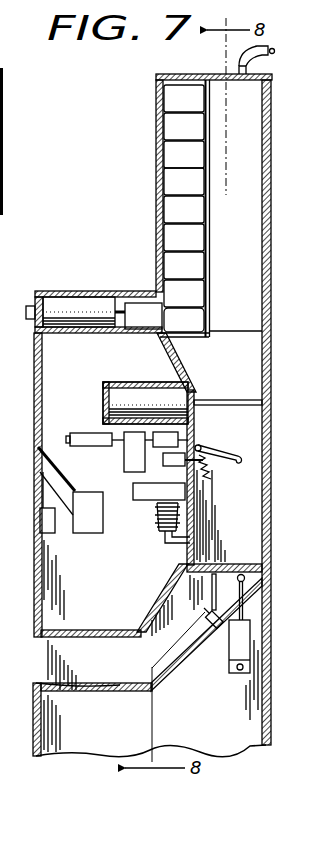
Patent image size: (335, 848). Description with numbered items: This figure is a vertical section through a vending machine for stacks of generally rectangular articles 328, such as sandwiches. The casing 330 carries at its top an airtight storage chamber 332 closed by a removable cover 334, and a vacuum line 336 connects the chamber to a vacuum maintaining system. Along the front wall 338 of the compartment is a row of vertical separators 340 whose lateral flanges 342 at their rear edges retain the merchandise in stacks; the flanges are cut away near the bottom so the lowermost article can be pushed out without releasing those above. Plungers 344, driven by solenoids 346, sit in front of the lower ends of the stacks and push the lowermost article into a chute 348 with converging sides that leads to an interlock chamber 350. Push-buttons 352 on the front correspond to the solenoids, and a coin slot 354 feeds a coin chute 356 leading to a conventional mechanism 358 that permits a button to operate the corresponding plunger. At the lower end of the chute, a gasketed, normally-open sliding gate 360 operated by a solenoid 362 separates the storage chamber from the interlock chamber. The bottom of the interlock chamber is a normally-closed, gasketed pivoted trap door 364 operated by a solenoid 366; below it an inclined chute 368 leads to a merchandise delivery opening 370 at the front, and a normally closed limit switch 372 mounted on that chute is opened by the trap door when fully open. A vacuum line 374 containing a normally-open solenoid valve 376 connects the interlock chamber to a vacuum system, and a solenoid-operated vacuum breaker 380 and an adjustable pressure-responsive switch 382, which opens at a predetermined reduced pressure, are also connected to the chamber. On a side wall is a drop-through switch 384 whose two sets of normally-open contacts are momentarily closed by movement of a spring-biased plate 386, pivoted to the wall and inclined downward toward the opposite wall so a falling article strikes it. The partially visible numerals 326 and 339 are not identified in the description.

The partial numeral 326 is at (326, 173).
The articles 328 is at (172, 155).
The casing 330 is at (34, 380).
The storage chamber 332 is at (250, 164).
The removable cover 334 is at (178, 74).
The vacuum line 336 is at (275, 52).
The front wall 338 is at (161, 226).
The partial numeral 339 is at (324, 433).
The vertical separators 340 is at (324, 95).
The lateral flanges 342 is at (206, 140).
The plungers 344 is at (138, 305).
The solenoids 346 is at (66, 302).
The chute 348 is at (233, 363).
The interlock chamber 350 is at (240, 526).
The push-buttons 352 is at (28, 310).
The coin slot 354 is at (38, 448).
The coin chute 356 is at (66, 472).
The conventional mechanism 358 is at (90, 533).
The sliding gate 360 is at (205, 397).
The solenoid 362 is at (125, 392).
The trap door 364 is at (195, 574).
The solenoid 366 is at (252, 641).
The inclined chute 368 is at (165, 612).
The merchandise delivery opening 370 is at (50, 663).
The limit switch 372 is at (212, 623).
The vacuum line 374 is at (78, 433).
The solenoid valve 376 is at (124, 468).
The solenoid-operated vacuum breaker 380 is at (138, 500).
The pressure-responsive switch 382 is at (164, 534).
The drop-through switch 384 is at (165, 458).
The spring-biased plate 386 is at (210, 456).